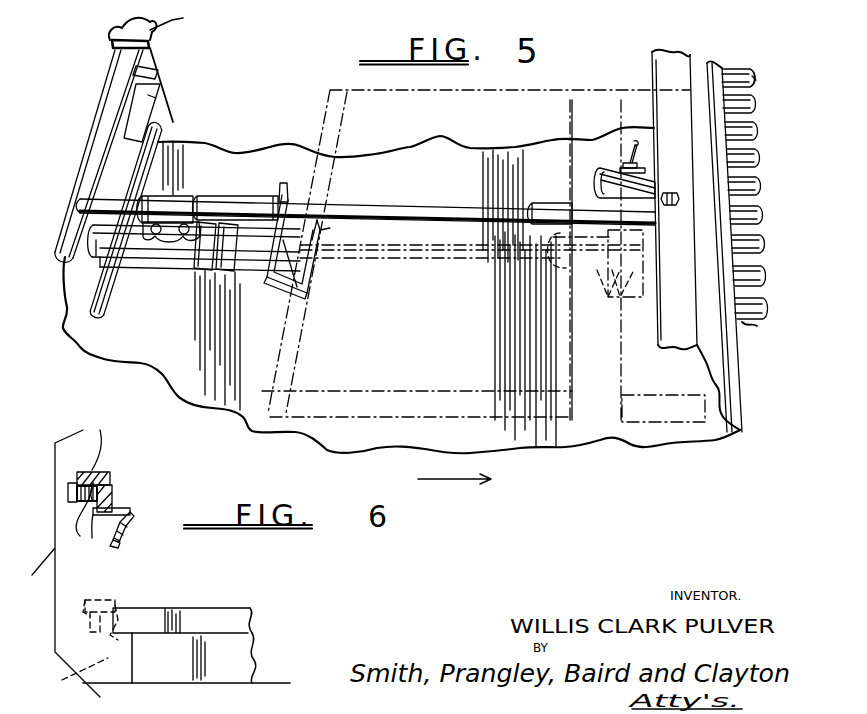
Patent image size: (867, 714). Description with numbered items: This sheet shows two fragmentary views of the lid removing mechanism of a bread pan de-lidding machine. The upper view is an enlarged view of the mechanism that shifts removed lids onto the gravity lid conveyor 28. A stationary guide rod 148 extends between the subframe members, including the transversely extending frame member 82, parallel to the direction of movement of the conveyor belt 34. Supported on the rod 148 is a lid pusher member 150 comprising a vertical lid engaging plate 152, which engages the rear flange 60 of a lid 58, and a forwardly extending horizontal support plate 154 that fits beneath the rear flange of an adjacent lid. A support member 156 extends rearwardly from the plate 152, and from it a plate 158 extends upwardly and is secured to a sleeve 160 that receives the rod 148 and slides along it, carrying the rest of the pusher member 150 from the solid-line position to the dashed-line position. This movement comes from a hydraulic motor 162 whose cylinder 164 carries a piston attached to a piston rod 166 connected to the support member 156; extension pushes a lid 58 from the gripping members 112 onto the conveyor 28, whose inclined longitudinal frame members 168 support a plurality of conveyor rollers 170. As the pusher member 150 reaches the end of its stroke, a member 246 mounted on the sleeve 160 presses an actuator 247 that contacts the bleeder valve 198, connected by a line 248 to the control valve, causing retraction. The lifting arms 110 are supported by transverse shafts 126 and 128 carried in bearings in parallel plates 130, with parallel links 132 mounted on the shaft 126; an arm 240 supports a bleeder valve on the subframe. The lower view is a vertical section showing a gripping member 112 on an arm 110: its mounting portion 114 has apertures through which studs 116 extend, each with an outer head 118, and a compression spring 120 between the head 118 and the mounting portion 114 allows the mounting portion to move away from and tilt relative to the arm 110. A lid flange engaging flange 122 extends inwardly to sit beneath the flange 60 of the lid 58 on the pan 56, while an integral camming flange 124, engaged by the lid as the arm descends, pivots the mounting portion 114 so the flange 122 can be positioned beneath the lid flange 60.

In FIG. 5, the gravity lid conveyor 28 is at (741, 140).
In FIG. 5, the conveyor belt 34 is at (474, 441).
In FIG. 6, the conveyor belt 34 is at (270, 683).
In FIG. 6, the pan 56 is at (232, 660).
In FIG. 5, the lid 58 is at (368, 100).
In FIG. 6, the lid 58 is at (168, 608).
In FIG. 6, the flanges 60 is at (232, 622).
In FIG. 5, the transversely extending frame member 82 is at (663, 68).
In FIG. 6, the arms 110 is at (102, 474).
In FIG. 6, the gripping member 112 is at (141, 510).
In FIG. 6, the mounting portion 114 is at (92, 538).
In FIG. 6, the studs 116 is at (93, 505).
In FIG. 6, the head 118 is at (72, 484).
In FIG. 6, the spring 120 is at (103, 472).
In FIG. 6, the lid flange engaging flange 122 is at (130, 506).
In FIG. 6, the camming flange 124 is at (118, 542).
In FIG. 5, the shaft 126 is at (96, 140).
In FIG. 5, the shaft 128 is at (143, 163).
In FIG. 5, the parallel plates 130 is at (148, 104).
In FIG. 5, the parallel links 132 is at (183, 20).
In FIG. 5, the guide rod 148 is at (384, 210).
In FIG. 5, the lid pusher member 150 is at (304, 267).
In FIG. 5, the lid engaging plate 152 is at (305, 238).
In FIG. 5, the support plate 154 is at (306, 296).
In FIG. 5, the support member 156 is at (257, 252).
In FIG. 5, the plate 158 is at (241, 205).
In FIG. 5, the sleeve 160 is at (190, 208).
In FIG. 5, the hydraulic motor 162 is at (91, 285).
In FIG. 5, the cylinder 164 is at (140, 258).
In FIG. 5, the piston rod 166 is at (436, 250).
In FIG. 5, the longitudinal frame members 168 is at (710, 96).
In FIG. 5, the conveyor rollers 170 is at (746, 76).
In FIG. 5, the bleeder valve 198 is at (644, 176).
In FIG. 5, the arm 240 is at (158, 72).
In FIG. 5, the member 246 is at (286, 190).
In FIG. 5, the actuator 247 is at (623, 157).
In FIG. 5, the line 248 is at (622, 142).